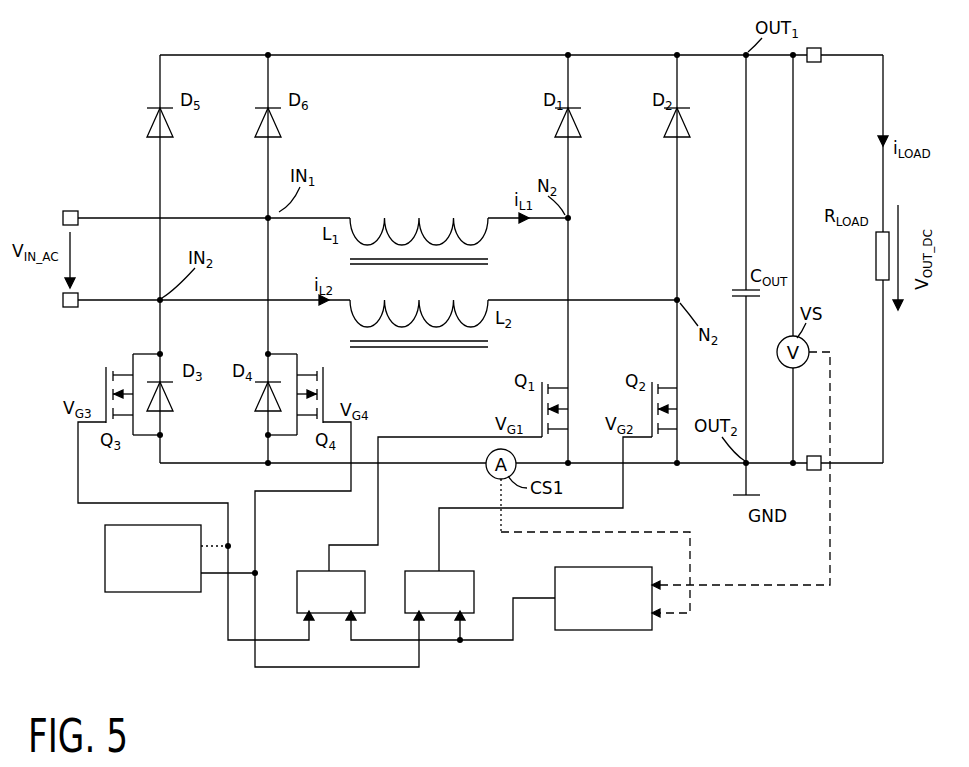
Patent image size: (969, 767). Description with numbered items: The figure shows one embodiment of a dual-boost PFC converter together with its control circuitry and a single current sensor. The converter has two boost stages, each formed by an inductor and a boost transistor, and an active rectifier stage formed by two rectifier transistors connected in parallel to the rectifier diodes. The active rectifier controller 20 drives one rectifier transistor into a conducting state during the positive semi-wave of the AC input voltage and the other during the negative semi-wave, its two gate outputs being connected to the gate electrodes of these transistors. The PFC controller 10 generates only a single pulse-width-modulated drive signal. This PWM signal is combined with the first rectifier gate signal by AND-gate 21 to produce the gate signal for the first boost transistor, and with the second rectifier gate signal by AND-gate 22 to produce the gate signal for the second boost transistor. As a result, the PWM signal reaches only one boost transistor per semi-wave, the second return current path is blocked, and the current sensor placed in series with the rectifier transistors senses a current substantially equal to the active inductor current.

The PFC controller 10 is at (585, 632).
The active rectifier controller 20 is at (178, 593).
The AND-gate 21 is at (306, 569).
The AND-gate 22 is at (414, 569).